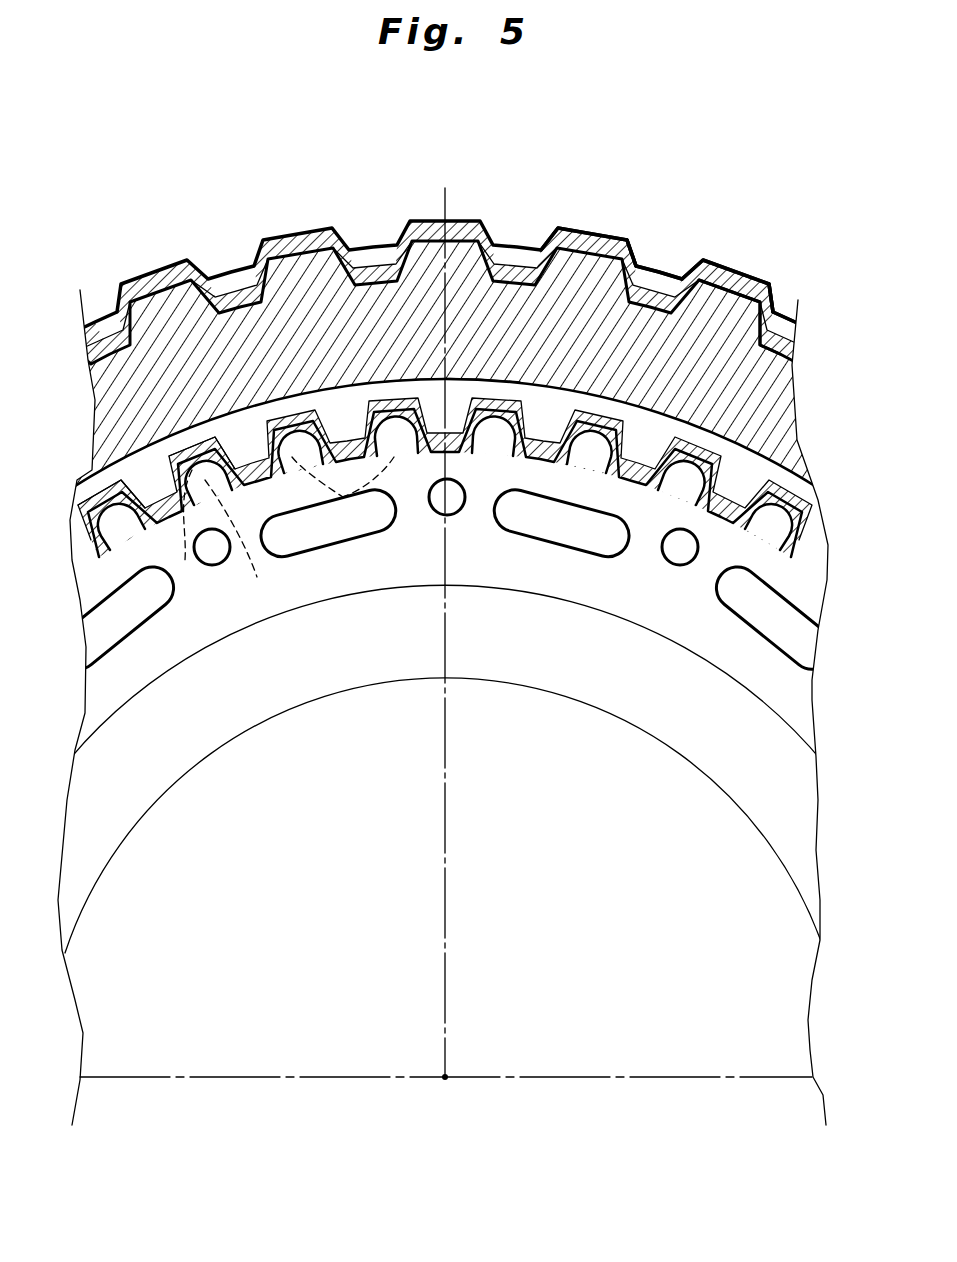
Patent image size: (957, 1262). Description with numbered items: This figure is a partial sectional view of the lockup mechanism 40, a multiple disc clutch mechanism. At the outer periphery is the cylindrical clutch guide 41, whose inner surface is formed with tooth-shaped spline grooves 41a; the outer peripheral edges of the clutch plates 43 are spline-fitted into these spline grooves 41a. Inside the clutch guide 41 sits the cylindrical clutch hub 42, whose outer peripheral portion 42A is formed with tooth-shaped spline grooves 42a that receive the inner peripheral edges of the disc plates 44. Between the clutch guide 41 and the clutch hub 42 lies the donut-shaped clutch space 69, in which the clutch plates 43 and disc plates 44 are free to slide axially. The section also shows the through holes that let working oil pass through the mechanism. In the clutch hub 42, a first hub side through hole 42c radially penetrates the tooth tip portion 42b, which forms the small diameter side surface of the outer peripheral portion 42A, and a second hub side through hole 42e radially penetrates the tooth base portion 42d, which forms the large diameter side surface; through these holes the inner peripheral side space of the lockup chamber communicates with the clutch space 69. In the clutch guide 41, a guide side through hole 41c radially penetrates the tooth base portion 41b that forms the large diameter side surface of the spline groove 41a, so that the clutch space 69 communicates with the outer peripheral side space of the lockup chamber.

The lockup mechanism 40 is at (153, 250).
The clutch guide 41 is at (267, 232).
The spline groove 41a is at (730, 319).
The tooth base portion 41b is at (582, 277).
The guide side through hole 41c is at (585, 233).
The clutch hub 42 is at (350, 383).
The outer peripheral portion 42A is at (826, 520).
The spline groove 42a is at (237, 434).
The tooth tip portion 42b is at (140, 480).
The first hub side through hole 42c is at (157, 480).
The tooth base portion 42d is at (213, 480).
The second hub side through hole 42e is at (293, 440).
The clutch plate 43 is at (427, 277).
The disc plate 44 is at (473, 387).
The clutch space 69 is at (657, 446).